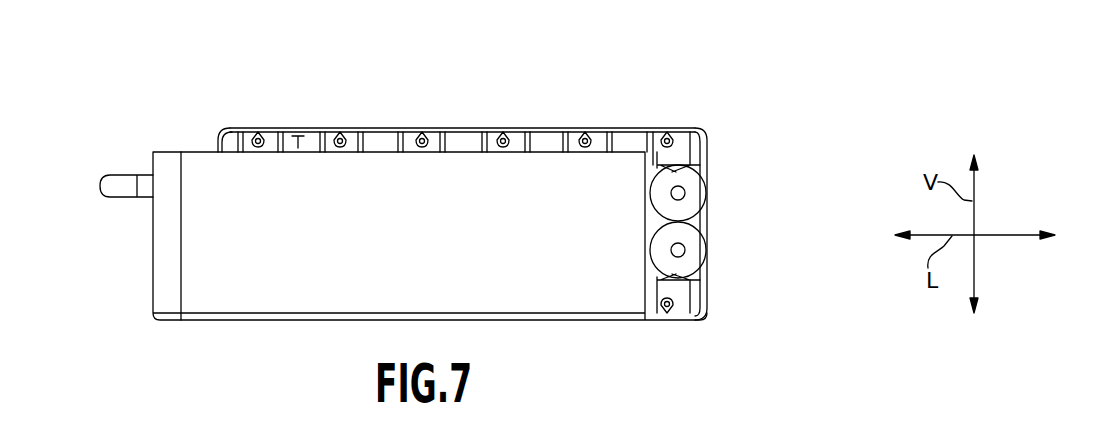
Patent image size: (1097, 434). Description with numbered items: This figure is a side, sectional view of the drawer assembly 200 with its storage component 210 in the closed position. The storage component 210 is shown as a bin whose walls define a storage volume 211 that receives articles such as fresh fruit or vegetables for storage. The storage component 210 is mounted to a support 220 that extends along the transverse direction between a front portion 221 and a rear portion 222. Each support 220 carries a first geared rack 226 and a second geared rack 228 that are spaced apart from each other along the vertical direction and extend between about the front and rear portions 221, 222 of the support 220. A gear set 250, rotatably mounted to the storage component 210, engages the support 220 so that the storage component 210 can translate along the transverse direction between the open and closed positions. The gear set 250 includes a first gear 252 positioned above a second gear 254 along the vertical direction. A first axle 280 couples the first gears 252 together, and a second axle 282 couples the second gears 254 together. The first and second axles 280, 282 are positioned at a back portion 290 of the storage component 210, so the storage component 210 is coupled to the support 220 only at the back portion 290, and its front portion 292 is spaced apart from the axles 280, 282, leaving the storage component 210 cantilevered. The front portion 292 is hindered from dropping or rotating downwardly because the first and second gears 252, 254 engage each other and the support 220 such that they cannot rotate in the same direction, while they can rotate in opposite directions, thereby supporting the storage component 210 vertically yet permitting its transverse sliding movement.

The drawer assembly 200 is at (80, 73).
The storage component 210 is at (152, 258).
The storage volume 211 is at (212, 190).
The supports 220 is at (463, 128).
The front portion 221 is at (238, 128).
The rear portion 222 is at (707, 130).
The first geared rack 226 is at (710, 172).
The second geared rack 228 is at (710, 274).
The gear sets 250 is at (708, 224).
The first gear 252 is at (706, 194).
The second gear 254 is at (706, 256).
The first axle 280 is at (671, 193).
The second axle 282 is at (671, 250).
The back portion 290 is at (657, 128).
The front portion 292 is at (150, 150).